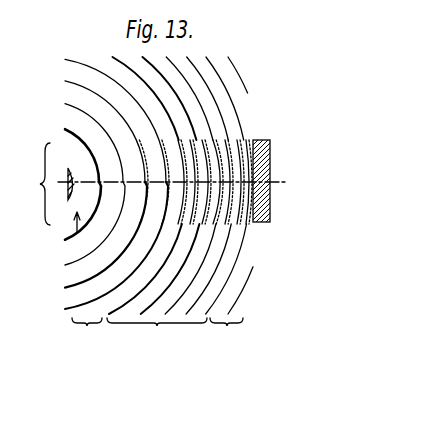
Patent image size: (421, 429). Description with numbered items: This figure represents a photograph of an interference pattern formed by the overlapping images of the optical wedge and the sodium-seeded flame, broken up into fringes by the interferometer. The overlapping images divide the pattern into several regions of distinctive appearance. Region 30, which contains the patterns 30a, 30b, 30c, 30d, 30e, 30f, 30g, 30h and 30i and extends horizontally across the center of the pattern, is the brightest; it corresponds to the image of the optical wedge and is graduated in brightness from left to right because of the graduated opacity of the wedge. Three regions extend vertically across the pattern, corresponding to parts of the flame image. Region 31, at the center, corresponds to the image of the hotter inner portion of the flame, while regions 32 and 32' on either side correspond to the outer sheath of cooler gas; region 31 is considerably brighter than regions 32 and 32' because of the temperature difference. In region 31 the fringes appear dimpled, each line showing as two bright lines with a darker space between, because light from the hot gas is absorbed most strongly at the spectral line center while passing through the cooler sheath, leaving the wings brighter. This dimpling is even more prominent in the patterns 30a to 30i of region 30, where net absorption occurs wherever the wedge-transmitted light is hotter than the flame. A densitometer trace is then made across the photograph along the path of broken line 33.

The region 30 is at (153, 184).
The pattern 30a is at (100, 190).
The pattern 30b is at (118, 212).
The pattern 30c is at (139, 219).
The pattern 30d is at (158, 233).
The pattern 30e is at (174, 243).
The pattern 30f is at (207, 250).
The pattern 30g is at (217, 223).
The pattern 30h is at (232, 218).
The pattern 30i is at (245, 141).
The region 31 is at (157, 332).
The region 32 is at (87, 332).
The region 32' is at (226, 331).
The broken line 33 is at (282, 180).